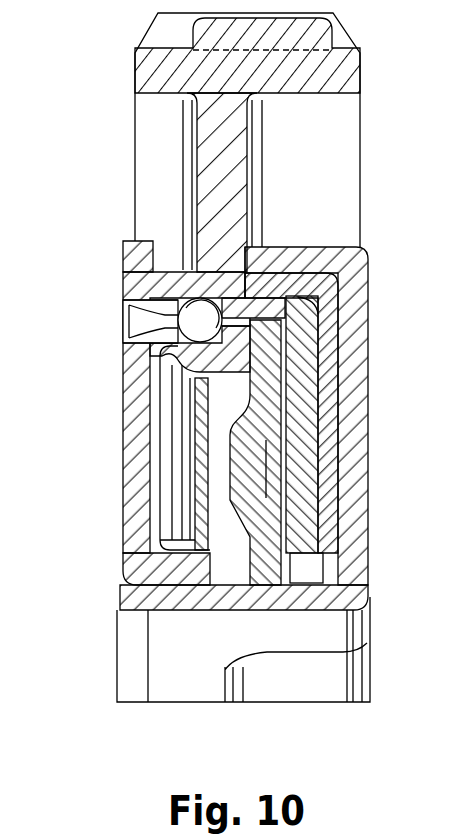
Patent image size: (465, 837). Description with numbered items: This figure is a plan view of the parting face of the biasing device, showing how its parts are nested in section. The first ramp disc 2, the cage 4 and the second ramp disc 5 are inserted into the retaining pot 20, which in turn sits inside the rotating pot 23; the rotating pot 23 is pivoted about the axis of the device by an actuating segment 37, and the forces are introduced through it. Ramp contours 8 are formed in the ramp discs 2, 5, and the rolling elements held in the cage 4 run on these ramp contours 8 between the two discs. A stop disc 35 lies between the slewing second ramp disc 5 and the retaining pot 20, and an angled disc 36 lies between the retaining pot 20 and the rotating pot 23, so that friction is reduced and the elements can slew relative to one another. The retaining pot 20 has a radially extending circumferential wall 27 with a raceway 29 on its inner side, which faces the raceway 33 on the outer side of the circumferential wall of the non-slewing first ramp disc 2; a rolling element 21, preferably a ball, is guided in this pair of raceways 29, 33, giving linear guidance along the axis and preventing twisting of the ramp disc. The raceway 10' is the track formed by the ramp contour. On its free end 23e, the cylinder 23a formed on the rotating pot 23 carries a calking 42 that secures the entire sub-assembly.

The actuating segment 37 is at (330, 78).
The rotating pot 23 is at (350, 357).
The radially extending circumferential wall 27 is at (123, 260).
The free end 23e is at (135, 592).
The cylinder 23a is at (208, 602).
The calking 42 is at (148, 612).
The angled disc 36 is at (328, 315).
The raceway 33 is at (160, 360).
The rolling element 21 is at (140, 326).
The raceway 29 is at (180, 318).
The first ramp disc 2 is at (148, 421).
The inner element 10' is at (133, 452).
The cage 4 is at (200, 510).
The ramp contour 8 is at (253, 470).
The retaining pot 20 is at (307, 432).
The stop disc 35 is at (290, 395).
The second ramp disc 5 is at (268, 567).